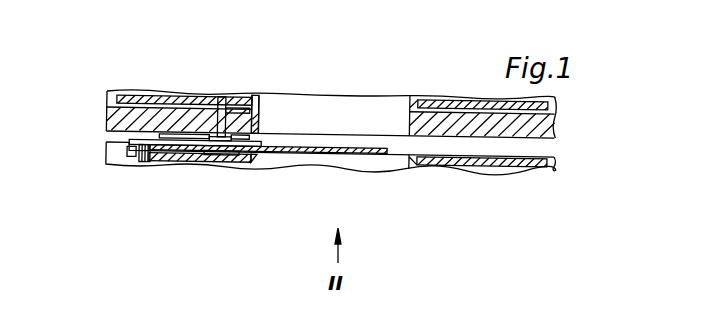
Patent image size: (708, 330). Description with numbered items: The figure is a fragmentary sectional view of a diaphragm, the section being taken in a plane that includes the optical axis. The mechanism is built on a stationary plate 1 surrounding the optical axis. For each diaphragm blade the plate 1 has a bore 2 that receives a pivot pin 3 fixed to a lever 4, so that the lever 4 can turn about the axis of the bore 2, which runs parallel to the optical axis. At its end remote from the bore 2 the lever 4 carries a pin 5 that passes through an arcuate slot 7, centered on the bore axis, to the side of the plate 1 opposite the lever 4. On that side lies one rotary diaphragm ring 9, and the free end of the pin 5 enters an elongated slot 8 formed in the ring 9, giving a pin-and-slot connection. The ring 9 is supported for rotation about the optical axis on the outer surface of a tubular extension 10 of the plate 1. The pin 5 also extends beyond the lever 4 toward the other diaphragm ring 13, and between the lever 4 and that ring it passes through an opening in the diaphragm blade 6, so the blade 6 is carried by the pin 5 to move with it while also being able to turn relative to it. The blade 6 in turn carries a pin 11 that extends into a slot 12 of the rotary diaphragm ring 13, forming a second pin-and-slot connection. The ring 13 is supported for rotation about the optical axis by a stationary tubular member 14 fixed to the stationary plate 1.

The stationary plate 1 is at (458, 113).
The bore 2 is at (172, 104).
The pivot pin 3 is at (188, 104).
The lever 4 is at (205, 144).
The pin 5 is at (224, 107).
The diaphragm blade 6 is at (318, 149).
The arcuate slot 7 is at (255, 128).
The elongated slot 8 is at (212, 95).
The rotary diaphragm ring 9 is at (130, 96).
The tubular extension 10 is at (256, 112).
The pin 11 is at (128, 149).
The slot 12 is at (148, 158).
The rotary diaphragm ring 13 is at (222, 153).
The stationary tubular member 14 is at (253, 160).